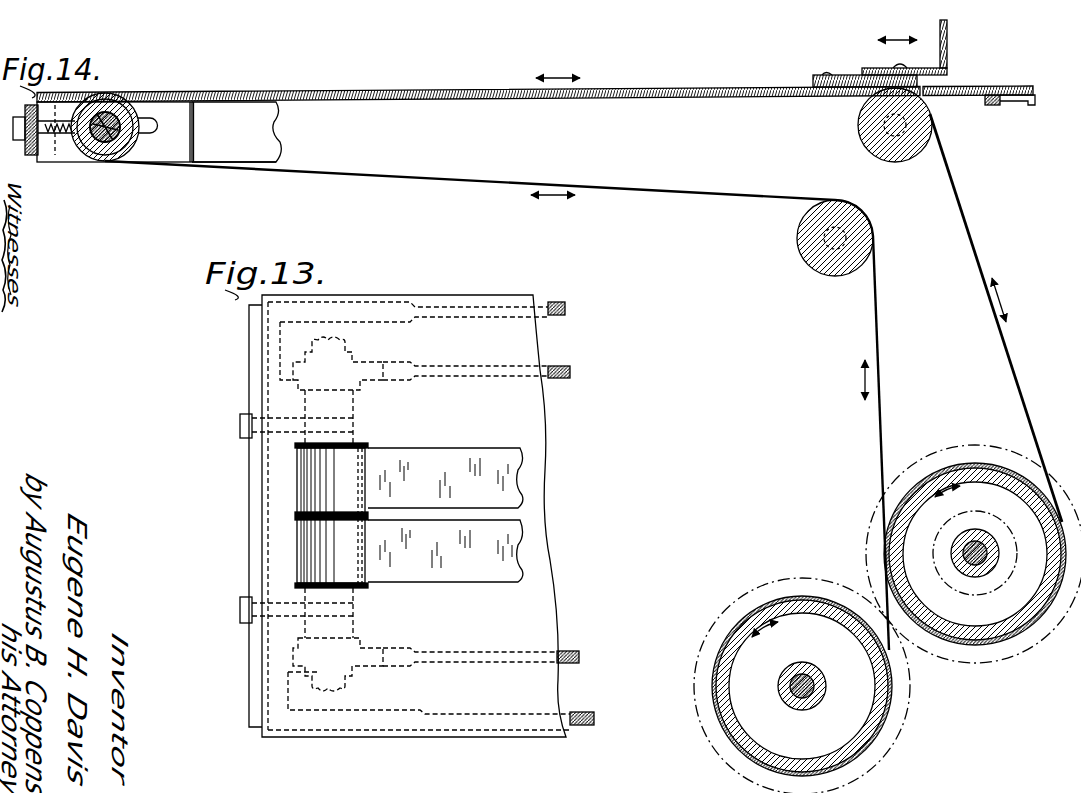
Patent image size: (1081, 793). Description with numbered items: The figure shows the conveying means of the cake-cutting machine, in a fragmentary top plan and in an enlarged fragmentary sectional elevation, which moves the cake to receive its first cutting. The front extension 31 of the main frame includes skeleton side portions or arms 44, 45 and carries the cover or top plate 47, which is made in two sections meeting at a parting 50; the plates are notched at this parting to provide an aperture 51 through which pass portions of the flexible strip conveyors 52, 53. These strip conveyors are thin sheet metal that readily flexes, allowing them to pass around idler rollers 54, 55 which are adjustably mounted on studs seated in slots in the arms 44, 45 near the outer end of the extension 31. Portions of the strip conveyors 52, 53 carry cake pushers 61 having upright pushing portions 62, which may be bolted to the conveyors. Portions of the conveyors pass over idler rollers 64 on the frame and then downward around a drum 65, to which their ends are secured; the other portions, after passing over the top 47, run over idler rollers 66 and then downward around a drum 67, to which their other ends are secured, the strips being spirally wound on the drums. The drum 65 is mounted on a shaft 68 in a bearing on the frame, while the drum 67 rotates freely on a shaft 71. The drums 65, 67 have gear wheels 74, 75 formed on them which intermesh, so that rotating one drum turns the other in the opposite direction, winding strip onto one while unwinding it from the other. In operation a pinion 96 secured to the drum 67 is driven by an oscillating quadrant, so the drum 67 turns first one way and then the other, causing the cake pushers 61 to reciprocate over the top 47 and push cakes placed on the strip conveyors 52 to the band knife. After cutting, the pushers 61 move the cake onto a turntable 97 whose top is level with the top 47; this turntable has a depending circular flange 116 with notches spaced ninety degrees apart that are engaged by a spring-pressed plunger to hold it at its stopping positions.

In FIG. 14, the front extension 31 is at (250, 152).
In FIG. 13, the front extension 31 is at (568, 380).
In FIG. 14, the side arm 44 is at (276, 130).
In FIG. 13, the side arm 44 is at (563, 316).
In FIG. 13, the side arm 45 is at (576, 712).
In FIG. 14, the top plate 47 is at (416, 98).
In FIG. 13, the top plate 47 is at (459, 518).
In FIG. 13, the parting 50 is at (300, 516).
In FIG. 13, the aperture 51 is at (340, 445).
In FIG. 14, the strip conveyor 52 is at (466, 90).
In FIG. 13, the strip conveyor 52 is at (445, 551).
In FIG. 13, the strip conveyor 53 is at (445, 478).
In FIG. 13, the idler roller 54 is at (372, 448).
In FIG. 14, the idler roller 55 is at (137, 158).
In FIG. 13, the idler roller 55 is at (355, 588).
In FIG. 14, the cake pusher 61 is at (872, 75).
In FIG. 14, the upright pushing portion 62 is at (940, 26).
In FIG. 14, the idler roller 64 is at (814, 264).
In FIG. 14, the drum 65 is at (722, 695).
In FIG. 14, the idler roller 66 is at (900, 161).
In FIG. 14, the drum 67 is at (1012, 641).
In FIG. 14, the shaft 68 is at (815, 688).
In FIG. 14, the shaft 71 is at (988, 568).
In FIG. 14, the gear wheel 74 is at (760, 590).
In FIG. 14, the gear wheel 75 is at (874, 518).
In FIG. 14, the pinion 96 is at (971, 590).
In FIG. 14, the turntable 97 is at (972, 96).
In FIG. 14, the depending circular flange 116 is at (995, 103).